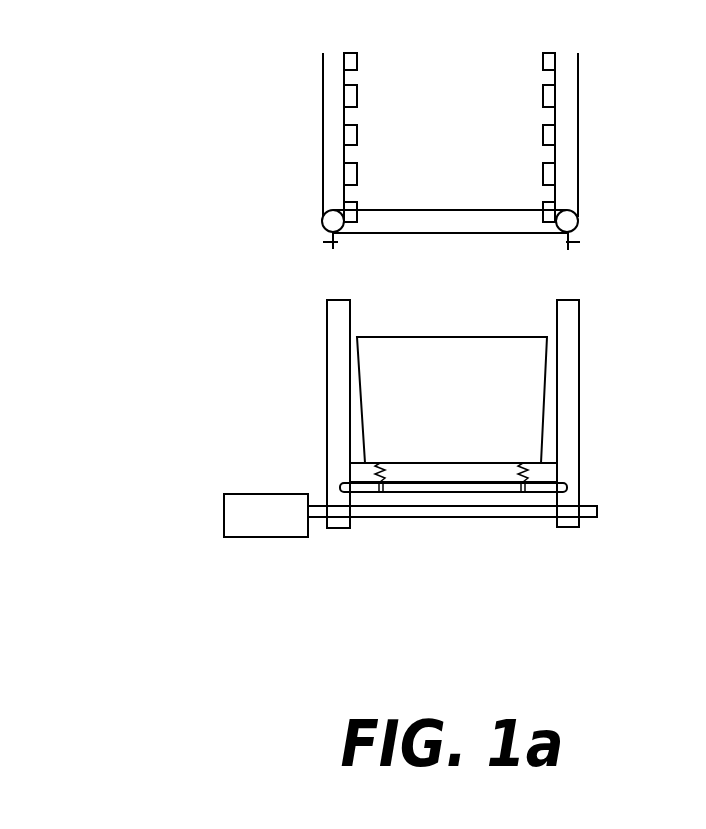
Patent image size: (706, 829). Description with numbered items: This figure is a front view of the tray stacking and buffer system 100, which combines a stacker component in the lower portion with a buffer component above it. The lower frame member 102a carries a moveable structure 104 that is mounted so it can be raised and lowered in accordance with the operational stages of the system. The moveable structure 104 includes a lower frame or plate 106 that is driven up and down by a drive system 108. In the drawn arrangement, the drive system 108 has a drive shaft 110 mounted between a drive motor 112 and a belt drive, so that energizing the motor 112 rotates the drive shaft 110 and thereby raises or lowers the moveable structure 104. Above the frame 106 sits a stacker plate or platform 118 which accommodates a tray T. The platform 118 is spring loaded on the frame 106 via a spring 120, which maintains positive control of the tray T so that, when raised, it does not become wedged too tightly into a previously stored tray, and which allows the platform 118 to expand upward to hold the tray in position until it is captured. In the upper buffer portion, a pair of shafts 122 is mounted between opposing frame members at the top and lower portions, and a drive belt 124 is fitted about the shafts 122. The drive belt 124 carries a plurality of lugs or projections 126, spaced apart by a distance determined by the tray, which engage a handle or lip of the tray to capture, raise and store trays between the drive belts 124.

The tray stacking and buffer system 100 is at (272, 165).
The lower frame member 102a is at (580, 420).
The moveable structure 104 is at (535, 491).
The lower frame or plate 106 is at (493, 488).
The drive system 108 is at (264, 549).
The drive shaft 110 is at (402, 520).
The drive motor 112 is at (236, 510).
The stacker plate or platform 118 is at (356, 470).
The spring 120 is at (373, 473).
The shafts 122 is at (323, 220).
The drive belt 124 is at (579, 121).
The lugs or projections 126 is at (547, 63).
The tray T is at (457, 355).